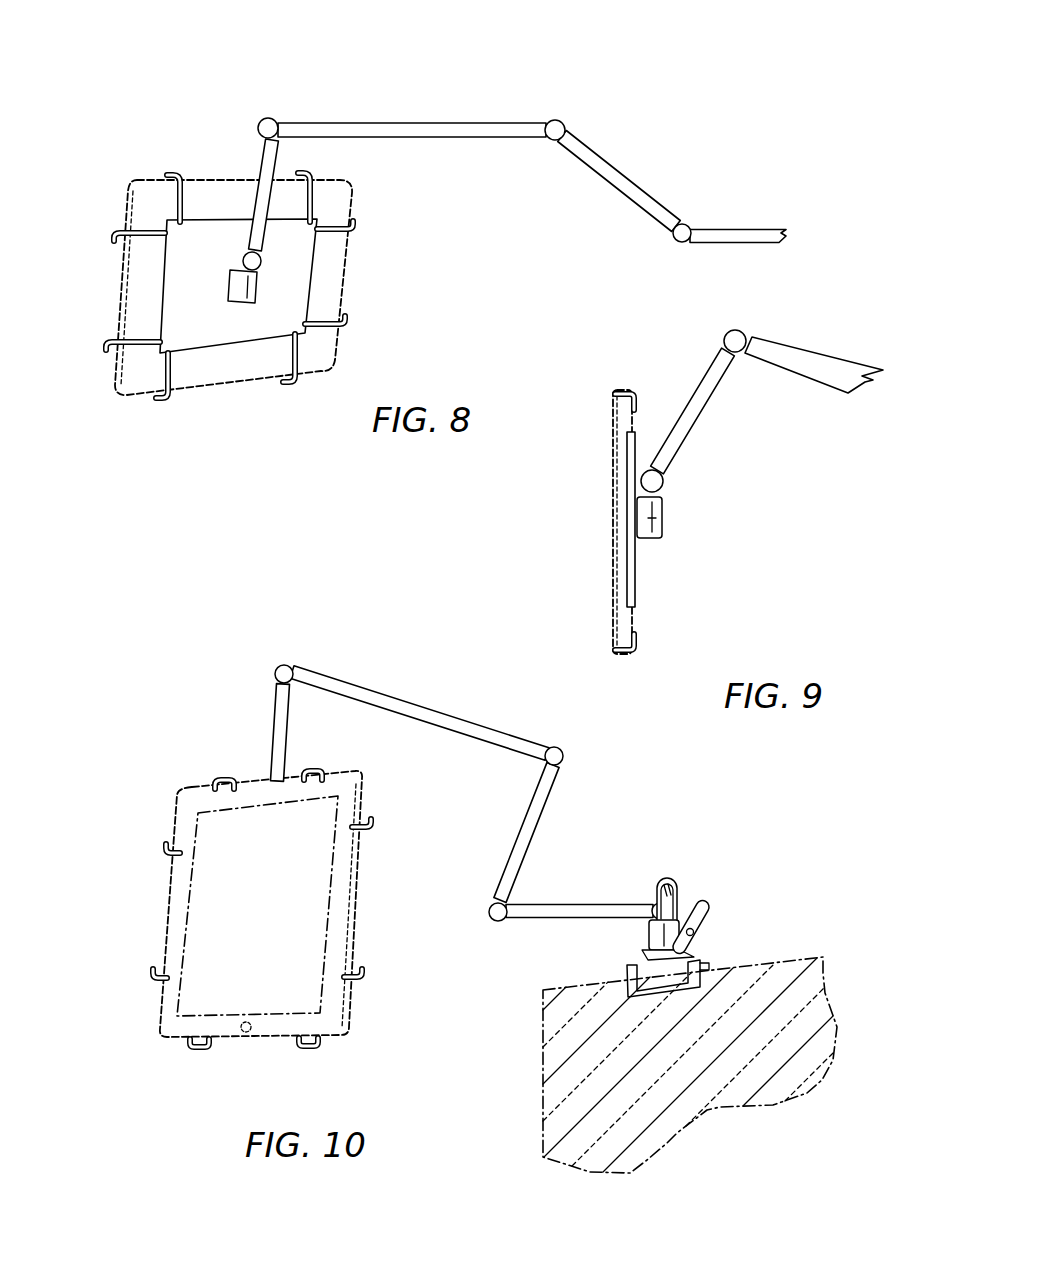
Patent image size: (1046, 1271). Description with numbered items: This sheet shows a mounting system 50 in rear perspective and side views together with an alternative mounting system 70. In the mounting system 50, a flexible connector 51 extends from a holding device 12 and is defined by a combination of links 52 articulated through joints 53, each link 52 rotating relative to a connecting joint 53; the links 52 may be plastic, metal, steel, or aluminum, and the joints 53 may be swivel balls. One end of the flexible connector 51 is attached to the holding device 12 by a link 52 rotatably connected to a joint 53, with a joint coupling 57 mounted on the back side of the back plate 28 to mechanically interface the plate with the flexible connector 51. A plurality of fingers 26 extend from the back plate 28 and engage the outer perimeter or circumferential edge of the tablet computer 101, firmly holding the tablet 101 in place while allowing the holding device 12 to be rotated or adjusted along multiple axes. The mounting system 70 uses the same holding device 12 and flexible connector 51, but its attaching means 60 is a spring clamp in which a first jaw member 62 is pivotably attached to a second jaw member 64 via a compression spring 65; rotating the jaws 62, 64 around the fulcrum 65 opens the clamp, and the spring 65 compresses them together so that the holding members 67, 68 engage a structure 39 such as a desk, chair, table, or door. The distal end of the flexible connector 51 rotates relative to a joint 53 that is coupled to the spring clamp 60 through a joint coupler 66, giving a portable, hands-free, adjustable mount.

In FIG. 8, the holding device 12 is at (229, 406).
In FIG. 8, the fingers 26 is at (360, 226).
In FIG. 9, the fingers 26 is at (625, 388).
In FIG. 10, the fingers 26 is at (350, 973).
In FIG. 8, the back plate 28 is at (202, 282).
In FIG. 9, the back plate 28 is at (637, 583).
In FIG. 10, the structure 39 is at (619, 1112).
In FIG. 8, the mounting system 50 is at (405, 74).
In FIG. 8, the flexible connector 51 is at (363, 118).
In FIG. 10, the flexible connector 51 is at (483, 722).
In FIG. 8, the links 52 is at (262, 158).
In FIG. 9, the links 52 is at (698, 412).
In FIG. 10, the links 52 is at (374, 703).
In FIG. 8, the joints 53 is at (266, 120).
In FIG. 9, the joints 53 is at (738, 334).
In FIG. 10, the joints 53 is at (280, 665).
In FIG. 8, the joint coupling 57 is at (238, 302).
In FIG. 9, the joint coupling 57 is at (666, 520).
In FIG. 10, the attaching means 60 is at (719, 836).
In FIG. 10, the first jaw member 62 is at (663, 882).
In FIG. 10, the second jaw member 64 is at (712, 906).
In FIG. 10, the compression spring 65 is at (698, 933).
In FIG. 10, the joint coupler 66 is at (650, 934).
In FIG. 10, the holding member 67 is at (706, 965).
In FIG. 10, the holding member 68 is at (679, 975).
In FIG. 10, the mounting system 70 is at (348, 620).
In FIG. 8, the tablet computer 101 is at (140, 208).
In FIG. 9, the tablet computer 101 is at (614, 506).
In FIG. 10, the tablet computer 101 is at (240, 906).